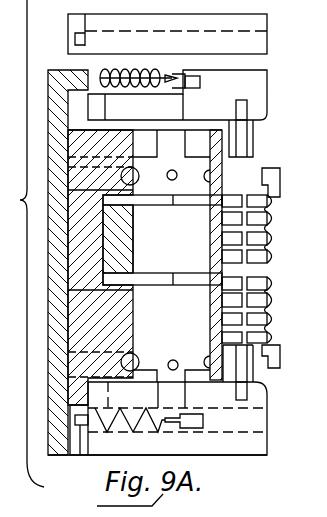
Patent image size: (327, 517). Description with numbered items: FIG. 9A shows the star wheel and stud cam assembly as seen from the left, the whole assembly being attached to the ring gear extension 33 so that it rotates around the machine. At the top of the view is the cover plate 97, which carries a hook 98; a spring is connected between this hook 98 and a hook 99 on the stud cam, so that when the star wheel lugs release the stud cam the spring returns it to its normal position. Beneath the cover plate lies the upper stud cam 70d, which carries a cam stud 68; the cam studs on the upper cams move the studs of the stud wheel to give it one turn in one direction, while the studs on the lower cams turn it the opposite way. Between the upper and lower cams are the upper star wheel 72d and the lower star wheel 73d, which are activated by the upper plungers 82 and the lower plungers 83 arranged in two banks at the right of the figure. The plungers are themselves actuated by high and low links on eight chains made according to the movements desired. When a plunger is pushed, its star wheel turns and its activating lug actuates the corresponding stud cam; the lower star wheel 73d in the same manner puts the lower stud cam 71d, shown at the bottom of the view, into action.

The ring gear extension 33 is at (62, 448).
The hook 98 is at (73, 42).
The cover plate 97 is at (122, 72).
The hook 99 is at (173, 76).
The upper stud cam 70d is at (225, 100).
The cam stud 68 is at (255, 141).
The upper star wheel 72d is at (191, 206).
The lower star wheel 73d is at (158, 287).
The upper plunger 82 is at (258, 195).
The lower plunger 83 is at (255, 278).
The lower stud cam 71d is at (260, 421).